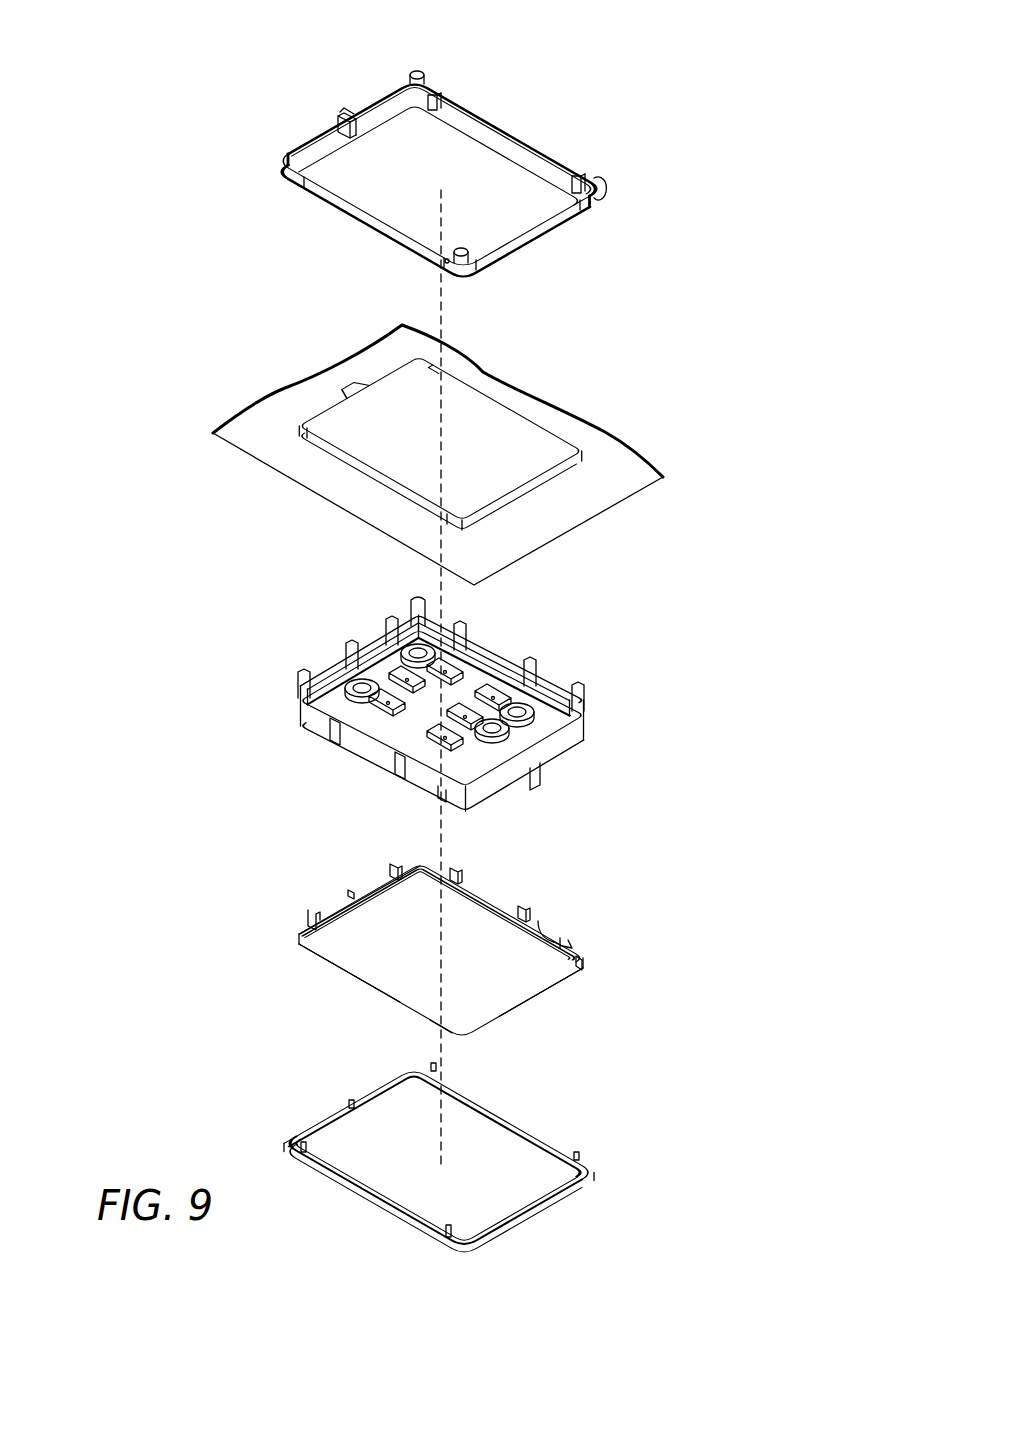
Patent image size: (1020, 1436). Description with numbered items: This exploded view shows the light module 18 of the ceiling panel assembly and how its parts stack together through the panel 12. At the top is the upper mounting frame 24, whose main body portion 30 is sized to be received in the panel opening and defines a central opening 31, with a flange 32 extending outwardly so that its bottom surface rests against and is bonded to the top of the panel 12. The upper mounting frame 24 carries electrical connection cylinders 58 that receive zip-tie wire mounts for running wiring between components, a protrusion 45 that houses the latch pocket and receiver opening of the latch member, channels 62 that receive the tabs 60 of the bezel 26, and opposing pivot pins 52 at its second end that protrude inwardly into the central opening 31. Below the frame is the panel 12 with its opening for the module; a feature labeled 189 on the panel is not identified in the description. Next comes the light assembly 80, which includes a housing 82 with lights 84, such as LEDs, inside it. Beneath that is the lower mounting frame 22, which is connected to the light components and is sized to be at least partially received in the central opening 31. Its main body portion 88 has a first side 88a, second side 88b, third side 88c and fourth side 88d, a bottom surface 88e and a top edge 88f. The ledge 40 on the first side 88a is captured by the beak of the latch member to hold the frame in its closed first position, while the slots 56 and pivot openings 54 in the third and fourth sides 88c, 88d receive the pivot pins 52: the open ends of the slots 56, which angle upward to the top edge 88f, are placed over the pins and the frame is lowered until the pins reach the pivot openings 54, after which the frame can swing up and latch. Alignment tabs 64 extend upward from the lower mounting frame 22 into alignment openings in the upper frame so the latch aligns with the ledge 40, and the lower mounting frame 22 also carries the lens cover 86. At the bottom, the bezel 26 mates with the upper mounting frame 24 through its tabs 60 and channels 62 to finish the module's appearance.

The light module 18 is at (130, 276).
The upper mounting frame 24 is at (298, 201).
The electrical connection cylinders 58 is at (418, 70).
The protrusion 45 is at (340, 140).
The channels 62 is at (437, 104).
The central opening 31 is at (484, 160).
The flange 32 is at (598, 192).
The main body portion 30 is at (553, 220).
The pivot pins 52 is at (454, 262).
The panel 12 is at (608, 486).
The raised pad 189 is at (502, 430).
The light assembly 80 is at (606, 668).
The housing 82 is at (496, 662).
The lights 84 is at (450, 734).
The lower mounting frame 22 is at (488, 904).
The ledge 40 is at (348, 894).
The alignment tabs 64 is at (398, 862).
The lens cover 86 is at (340, 948).
The main body portion 88 is at (584, 962).
The first side 88a is at (336, 914).
The second side 88b is at (560, 986).
The third side 88c is at (466, 894).
The fourth side 88d is at (302, 944).
The bottom surface 88e is at (510, 1006).
The top edge 88f is at (538, 922).
The slots 56 is at (560, 936).
The pivot openings 54 is at (580, 952).
The bezel 26 is at (530, 1130).
The tabs 60 is at (578, 1160).